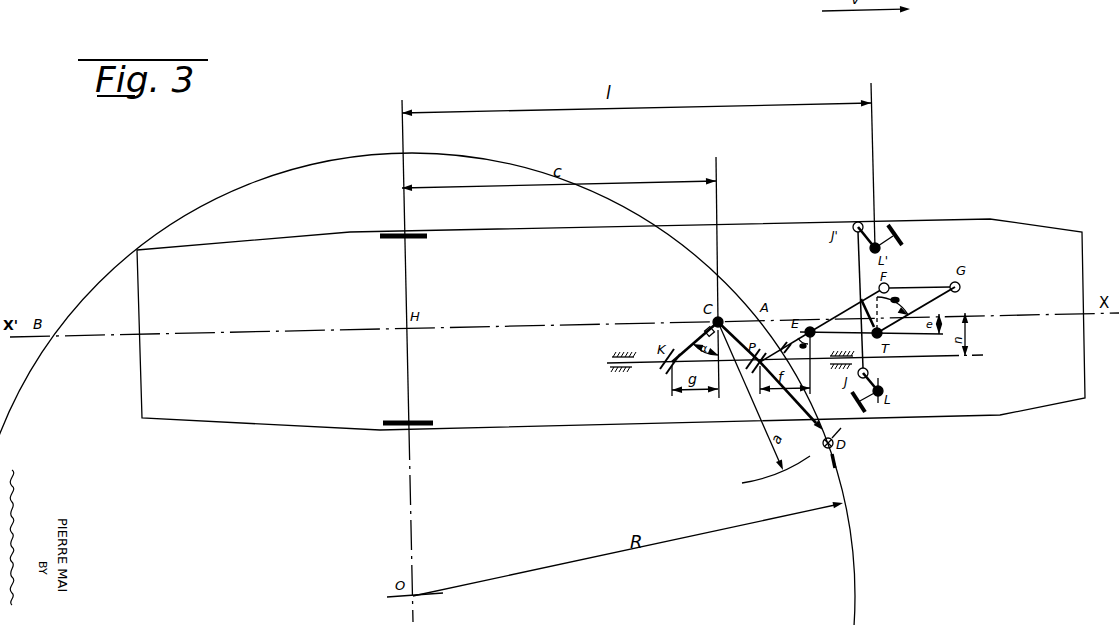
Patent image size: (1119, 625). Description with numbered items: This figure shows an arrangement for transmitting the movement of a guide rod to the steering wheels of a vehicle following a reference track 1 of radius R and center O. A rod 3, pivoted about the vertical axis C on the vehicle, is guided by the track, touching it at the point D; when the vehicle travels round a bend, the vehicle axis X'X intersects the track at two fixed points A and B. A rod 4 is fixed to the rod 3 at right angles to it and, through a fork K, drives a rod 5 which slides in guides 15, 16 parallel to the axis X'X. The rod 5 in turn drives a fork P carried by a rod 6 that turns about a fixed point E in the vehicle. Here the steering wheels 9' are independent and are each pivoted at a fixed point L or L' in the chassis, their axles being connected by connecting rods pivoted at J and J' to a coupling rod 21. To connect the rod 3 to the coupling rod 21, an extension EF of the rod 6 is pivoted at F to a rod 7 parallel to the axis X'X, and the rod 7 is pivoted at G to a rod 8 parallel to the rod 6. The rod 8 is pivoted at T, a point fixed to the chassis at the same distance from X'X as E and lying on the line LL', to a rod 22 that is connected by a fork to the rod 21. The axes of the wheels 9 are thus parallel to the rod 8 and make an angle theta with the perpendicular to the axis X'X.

The reference track 1 is at (320, 164).
The rod 3 is at (788, 392).
The rod 4 is at (697, 336).
The rod 5 is at (726, 367).
The rod 6 is at (785, 342).
The rod 7 is at (919, 280).
The rod 8 is at (916, 310).
The steering wheels 9 is at (855, 404).
The steering wheels 9' is at (901, 237).
The guide 15 is at (623, 355).
The guide 16 is at (842, 353).
The coupling rod 21 is at (860, 266).
The rod 22 is at (864, 324).